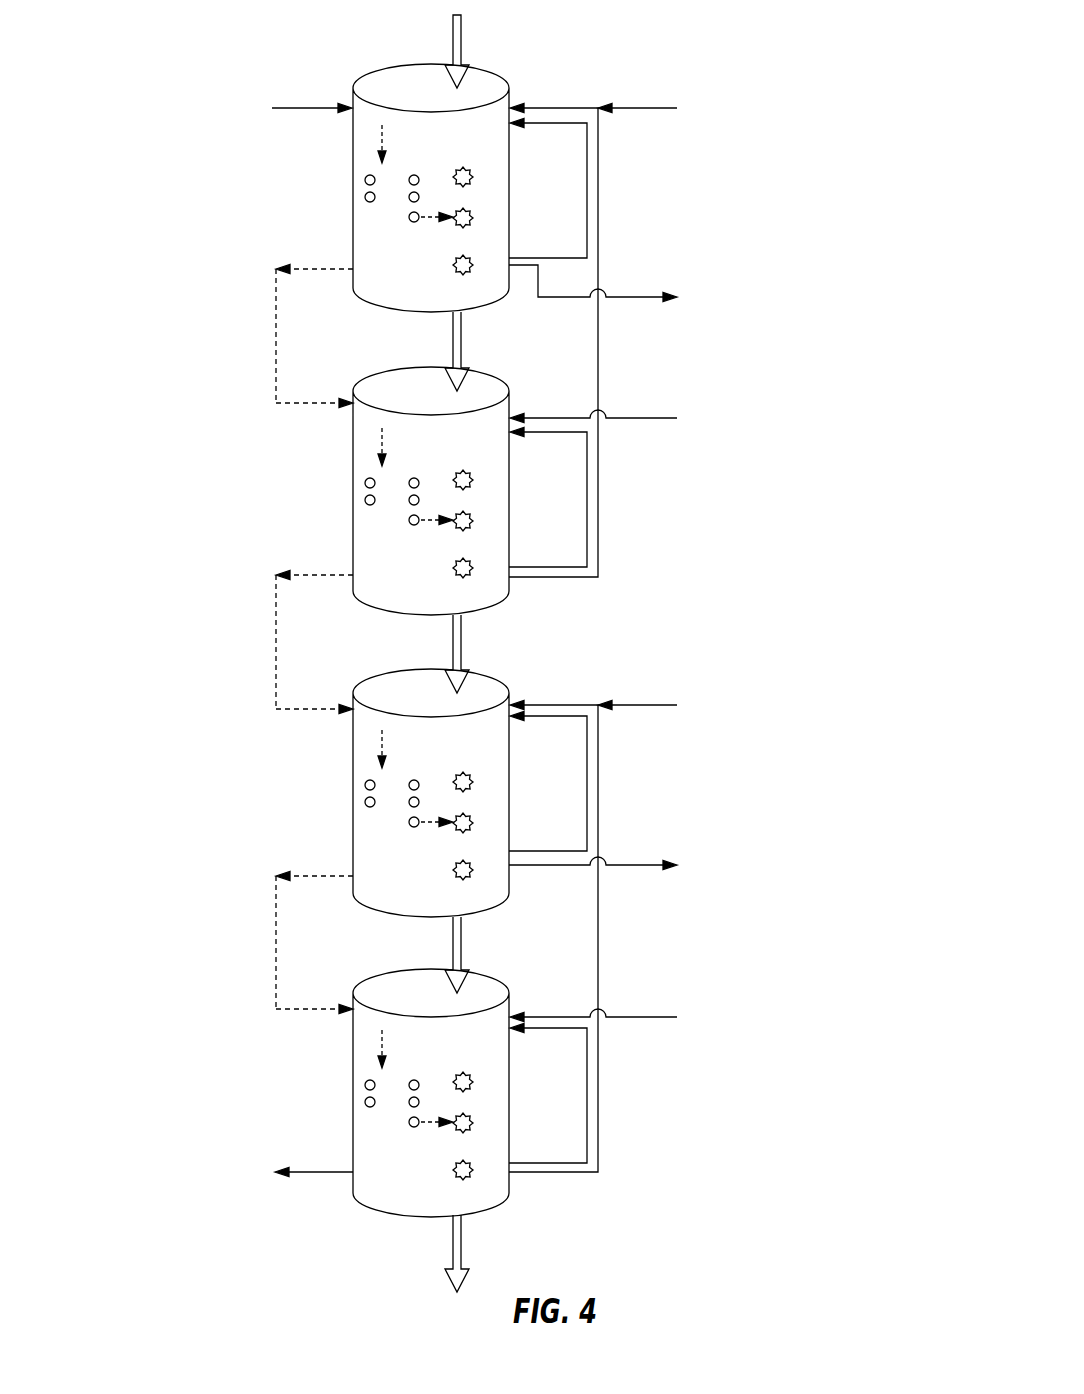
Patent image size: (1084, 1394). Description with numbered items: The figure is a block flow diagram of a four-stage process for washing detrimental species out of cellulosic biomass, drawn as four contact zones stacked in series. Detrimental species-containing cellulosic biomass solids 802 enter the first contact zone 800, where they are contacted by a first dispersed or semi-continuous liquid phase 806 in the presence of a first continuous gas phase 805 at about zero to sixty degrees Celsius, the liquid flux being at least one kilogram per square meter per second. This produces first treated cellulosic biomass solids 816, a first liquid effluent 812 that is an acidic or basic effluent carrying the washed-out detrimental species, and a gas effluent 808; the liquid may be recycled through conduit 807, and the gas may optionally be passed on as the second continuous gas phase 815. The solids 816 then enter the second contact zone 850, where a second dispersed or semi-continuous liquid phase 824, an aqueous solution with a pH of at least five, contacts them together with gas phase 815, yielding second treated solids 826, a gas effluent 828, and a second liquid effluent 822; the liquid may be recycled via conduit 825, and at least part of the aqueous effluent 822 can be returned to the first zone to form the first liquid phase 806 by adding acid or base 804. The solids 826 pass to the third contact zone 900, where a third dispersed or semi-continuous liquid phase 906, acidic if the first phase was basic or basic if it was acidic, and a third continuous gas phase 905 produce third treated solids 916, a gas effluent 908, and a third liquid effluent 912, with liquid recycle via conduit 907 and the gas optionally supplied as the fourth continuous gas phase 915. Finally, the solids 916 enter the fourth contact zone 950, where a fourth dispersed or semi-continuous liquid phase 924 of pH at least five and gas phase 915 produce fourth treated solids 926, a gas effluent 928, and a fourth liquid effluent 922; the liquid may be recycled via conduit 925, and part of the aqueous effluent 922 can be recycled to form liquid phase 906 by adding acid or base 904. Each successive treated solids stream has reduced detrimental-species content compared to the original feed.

The first contact zone 800 is at (446, 152).
The detrimental species-containing cellulosic biomass solids 802 is at (461, 32).
The acid or acidic solution / base or base solution 804 is at (663, 107).
The first continuous gas phase 805 is at (303, 107).
The first dispersed or semi-continuous liquid phase 806 is at (573, 107).
The conduit 807 is at (587, 218).
The gas effluent 808 is at (323, 268).
The first liquid effluent 812 is at (640, 294).
The second continuous gas phase 815 is at (323, 402).
The first dispersed or semi-continuous liquid phase treated cellulosic biomass solid 816 is at (461, 353).
The second liquid effluent 822 is at (598, 183).
The second dispersed or semi-continuous liquid phase 824 is at (640, 417).
The conduit 825 is at (587, 527).
The second dispersed or semi-continuous liquid phase treated cellulosic biomass soli 826 is at (461, 652).
The gas effluent 828 is at (323, 574).
The second contact zone 850 is at (446, 456).
The third contact zone 900 is at (446, 757).
The acid or acidic solution / base or base solution 904 is at (648, 704).
The third continuous gas phase 905 is at (323, 708).
The third dispersed or semi-continuous liquid phase 906 is at (557, 704).
The conduit 907 is at (587, 803).
The gas effluent 908 is at (323, 875).
The third liquid effluent 912 is at (640, 864).
The fourth continuous gas phase 915 is at (323, 1008).
The third dispersed or semi-continuous liquid phase treated cellulosic biomass solid 916 is at (461, 955).
The fourth liquid effluent 922 is at (598, 925).
The fourth dispersed or semi-continuous liquid phase 924 is at (640, 1016).
The conduit 925 is at (587, 1140).
The fourth dispersed or semi-continuous liquid phase treated cellulosic biomass soli 926 is at (461, 1258).
The gas effluent 928 is at (315, 1171).
The fourth contact zone 950 is at (446, 1057).